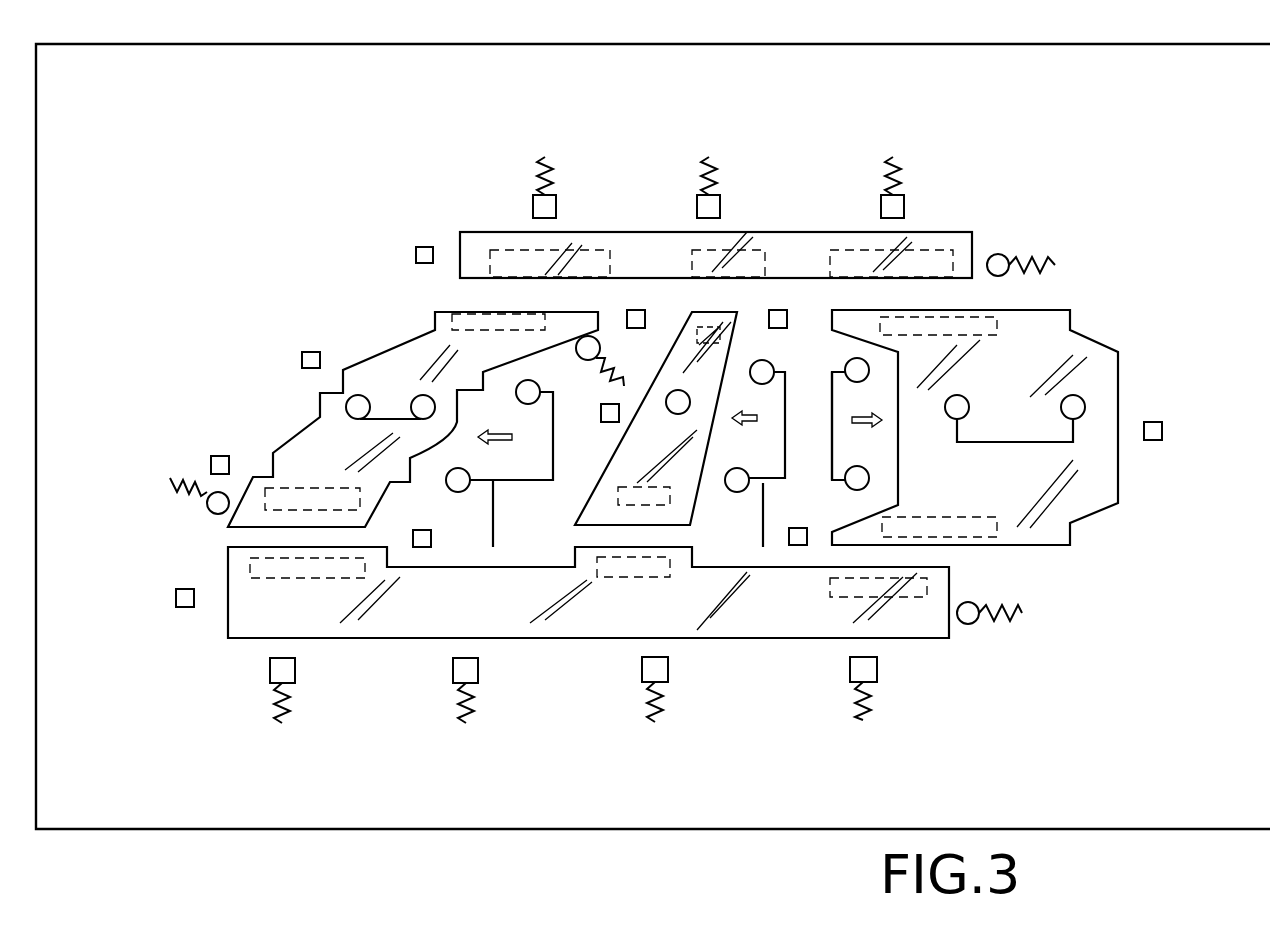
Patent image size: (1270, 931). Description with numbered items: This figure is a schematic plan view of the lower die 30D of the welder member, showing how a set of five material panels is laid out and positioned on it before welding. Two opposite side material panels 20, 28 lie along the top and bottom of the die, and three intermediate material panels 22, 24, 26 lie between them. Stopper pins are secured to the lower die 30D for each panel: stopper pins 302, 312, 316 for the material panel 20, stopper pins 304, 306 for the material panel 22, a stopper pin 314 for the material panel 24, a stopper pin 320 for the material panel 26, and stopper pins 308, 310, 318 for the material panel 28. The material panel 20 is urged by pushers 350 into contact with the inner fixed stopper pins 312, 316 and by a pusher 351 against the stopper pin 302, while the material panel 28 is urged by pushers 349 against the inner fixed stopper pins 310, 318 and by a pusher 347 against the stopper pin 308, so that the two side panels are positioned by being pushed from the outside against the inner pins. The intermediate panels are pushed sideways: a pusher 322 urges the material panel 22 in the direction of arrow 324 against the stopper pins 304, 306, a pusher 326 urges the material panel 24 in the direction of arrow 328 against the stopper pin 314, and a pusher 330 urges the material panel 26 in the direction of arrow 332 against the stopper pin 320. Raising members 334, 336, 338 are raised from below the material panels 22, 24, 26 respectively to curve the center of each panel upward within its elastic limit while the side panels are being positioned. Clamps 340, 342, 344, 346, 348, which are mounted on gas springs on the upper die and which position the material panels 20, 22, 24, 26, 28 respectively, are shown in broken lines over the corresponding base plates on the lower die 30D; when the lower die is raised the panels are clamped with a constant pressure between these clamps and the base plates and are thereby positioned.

The lower die 30D is at (1145, 44).
The material panel 20 is at (972, 238).
The material panel 22 is at (388, 350).
The material panel 24 is at (674, 345).
The material panel 26 is at (1070, 322).
The material panel 28 is at (415, 643).
The stopper pin 302 is at (425, 247).
The stopper pin 304 is at (302, 361).
The stopper pin 306 is at (213, 458).
The stopper pin 308 is at (176, 596).
The stopper pin 310 is at (432, 540).
The stopper pin 312 is at (636, 310).
The stopper pin 314 is at (607, 423).
The stopper pin 316 is at (779, 310).
The stopper pin 318 is at (798, 547).
The stopper pin 320 is at (1153, 440).
The pusher 322 is at (494, 520).
The arrow 324 is at (512, 437).
The pusher 326 is at (762, 520).
The arrow 328 is at (757, 418).
The pusher 330 is at (845, 443).
The arrow 332 is at (862, 424).
The raising member 334 is at (387, 417).
The raising member 336 is at (666, 402).
The raising member 338 is at (1013, 442).
The clamp 340 is at (505, 247).
The clamp 342 is at (433, 320).
The clamp 344 is at (697, 325).
The clamp 346 is at (920, 336).
The pusher 347 is at (1015, 620).
The clamp 348 is at (277, 578).
The pusher 349 is at (292, 700).
The pusher 350 is at (545, 156).
The pusher 351 is at (1056, 263).